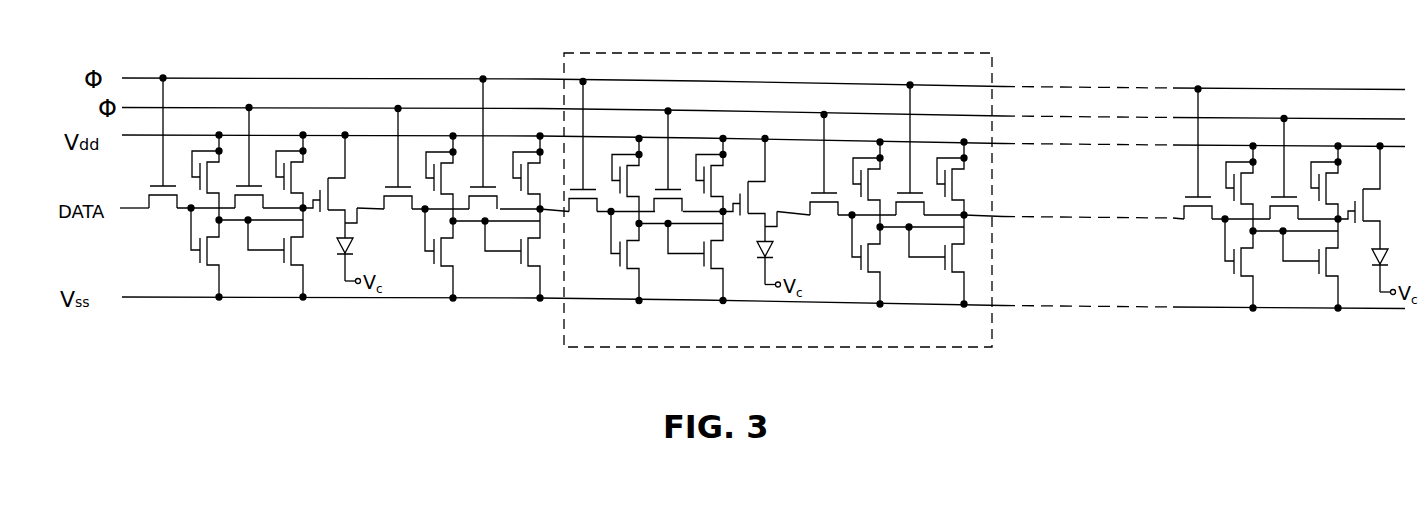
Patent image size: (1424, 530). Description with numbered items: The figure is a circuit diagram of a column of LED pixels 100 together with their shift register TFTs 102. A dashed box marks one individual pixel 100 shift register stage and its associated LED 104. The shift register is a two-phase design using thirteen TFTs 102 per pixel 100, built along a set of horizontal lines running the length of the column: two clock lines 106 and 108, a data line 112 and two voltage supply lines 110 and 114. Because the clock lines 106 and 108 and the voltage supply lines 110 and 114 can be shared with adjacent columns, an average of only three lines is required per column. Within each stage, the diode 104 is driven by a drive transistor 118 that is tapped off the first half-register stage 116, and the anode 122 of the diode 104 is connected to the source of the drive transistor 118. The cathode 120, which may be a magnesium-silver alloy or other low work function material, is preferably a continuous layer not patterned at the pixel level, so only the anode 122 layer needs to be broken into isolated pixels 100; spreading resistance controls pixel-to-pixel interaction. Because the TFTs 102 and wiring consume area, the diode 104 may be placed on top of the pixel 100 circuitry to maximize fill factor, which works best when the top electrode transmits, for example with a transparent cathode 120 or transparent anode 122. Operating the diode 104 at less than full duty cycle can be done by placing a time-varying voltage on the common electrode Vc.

The pixel 100 is at (857, 53).
The shift register TFT 102 is at (577, 206).
The LED 104 is at (841, 295).
The clock line 106 is at (220, 78).
The clock line 108 is at (320, 108).
The voltage supply line 110 is at (417, 136).
The data line 112 is at (134, 211).
The voltage supply line 114 is at (234, 299).
The first half-register stage 116 is at (708, 202).
The drive transistor 118 is at (760, 195).
The cathode 120 is at (763, 251).
The anode 122 is at (823, 305).